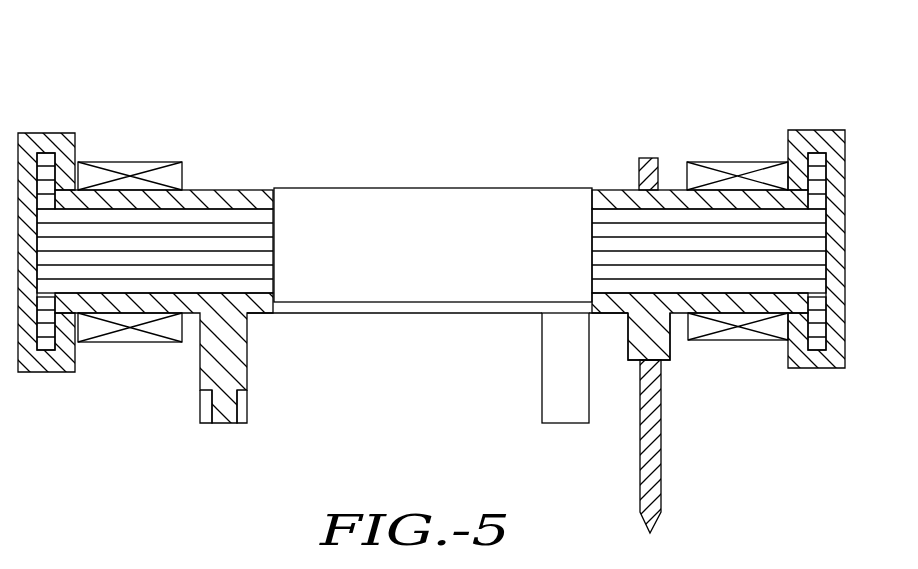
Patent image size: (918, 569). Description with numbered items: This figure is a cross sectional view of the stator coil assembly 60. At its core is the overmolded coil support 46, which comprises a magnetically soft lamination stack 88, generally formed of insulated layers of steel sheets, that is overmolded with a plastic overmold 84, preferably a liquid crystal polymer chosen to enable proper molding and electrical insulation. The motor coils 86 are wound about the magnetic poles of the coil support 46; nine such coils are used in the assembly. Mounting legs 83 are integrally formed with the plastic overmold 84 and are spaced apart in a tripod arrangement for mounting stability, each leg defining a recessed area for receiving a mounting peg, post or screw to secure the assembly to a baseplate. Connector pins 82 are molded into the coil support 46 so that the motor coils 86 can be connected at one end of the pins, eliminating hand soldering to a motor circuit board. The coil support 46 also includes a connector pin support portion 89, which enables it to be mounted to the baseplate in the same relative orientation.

The overmolded coil support 46 is at (889, 373).
The stator coil assembly 60 is at (591, 124).
The connector pins 82 is at (661, 462).
The mounting legs 83 is at (200, 398).
The plastic overmold 84 is at (603, 196).
The motor coils 86 is at (130, 162).
The lamination stack 88 is at (225, 225).
The connector pin support portion 89 is at (670, 350).